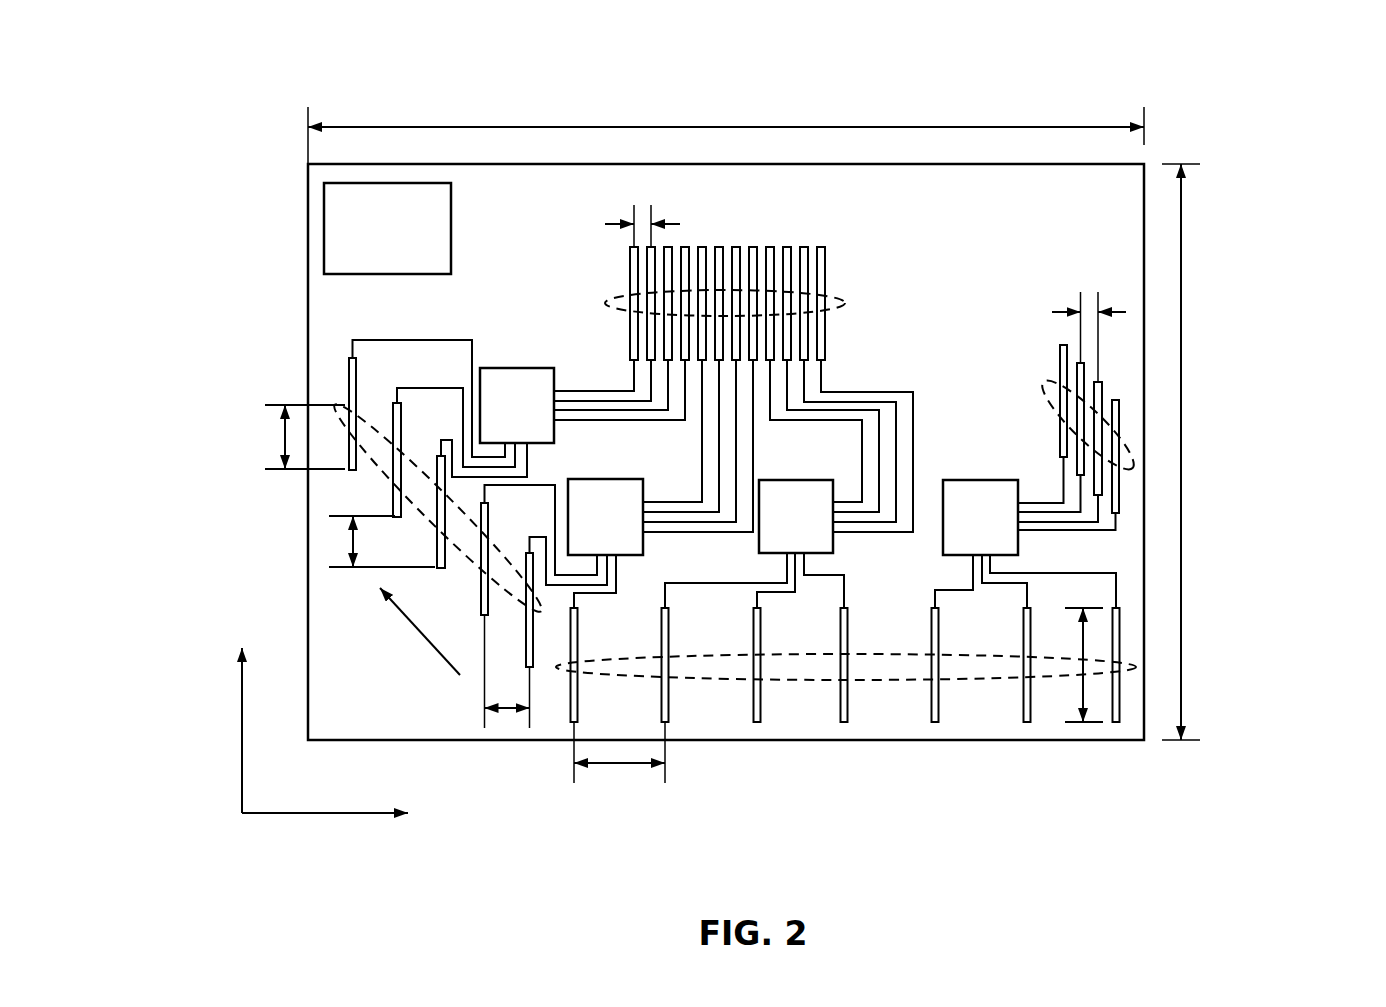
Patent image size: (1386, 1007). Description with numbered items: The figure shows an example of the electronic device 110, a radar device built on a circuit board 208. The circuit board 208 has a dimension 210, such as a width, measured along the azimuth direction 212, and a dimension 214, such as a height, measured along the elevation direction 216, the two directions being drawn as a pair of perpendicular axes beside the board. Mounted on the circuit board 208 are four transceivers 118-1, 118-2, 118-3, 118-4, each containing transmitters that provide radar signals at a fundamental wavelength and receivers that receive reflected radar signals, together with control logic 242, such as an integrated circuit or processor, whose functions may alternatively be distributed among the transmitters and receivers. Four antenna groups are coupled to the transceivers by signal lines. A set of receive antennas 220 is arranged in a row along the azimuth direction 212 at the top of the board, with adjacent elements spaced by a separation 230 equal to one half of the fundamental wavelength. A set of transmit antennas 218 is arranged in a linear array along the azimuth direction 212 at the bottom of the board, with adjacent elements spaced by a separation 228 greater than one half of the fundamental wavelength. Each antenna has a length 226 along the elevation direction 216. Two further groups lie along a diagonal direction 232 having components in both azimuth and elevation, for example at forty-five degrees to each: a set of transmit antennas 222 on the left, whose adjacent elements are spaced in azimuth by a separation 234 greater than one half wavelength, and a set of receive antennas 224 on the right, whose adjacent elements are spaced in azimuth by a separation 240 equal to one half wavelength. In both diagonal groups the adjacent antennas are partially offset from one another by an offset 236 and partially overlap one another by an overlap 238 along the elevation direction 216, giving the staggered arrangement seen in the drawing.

The electronic device 110 is at (1167, 72).
The circuit board 208 is at (726, 452).
The control logic 242 is at (387, 228).
The transceiver 118-1 is at (517, 405).
The transceiver 118-2 is at (605, 517).
The transceiver 118-3 is at (796, 516).
The transceiver 118-4 is at (980, 517).
The set of receive antennas 220 is at (838, 290).
The set of transmit antennas 222 is at (365, 423).
The set of receive antennas 224 is at (1045, 383).
The set of transmit antennas 218 is at (873, 683).
The dimension 210 is at (676, 133).
The dimension 214 is at (1182, 445).
The length 226 is at (1120, 686).
The overlap 238 is at (282, 442).
The offset 236 is at (350, 545).
The direction 232 is at (390, 652).
The separation 234 is at (508, 712).
The separation 228 is at (625, 763).
The separation 230 is at (643, 226).
The separation 240 is at (1090, 313).
The elevation direction 216 is at (242, 738).
The azimuth direction 212 is at (310, 815).